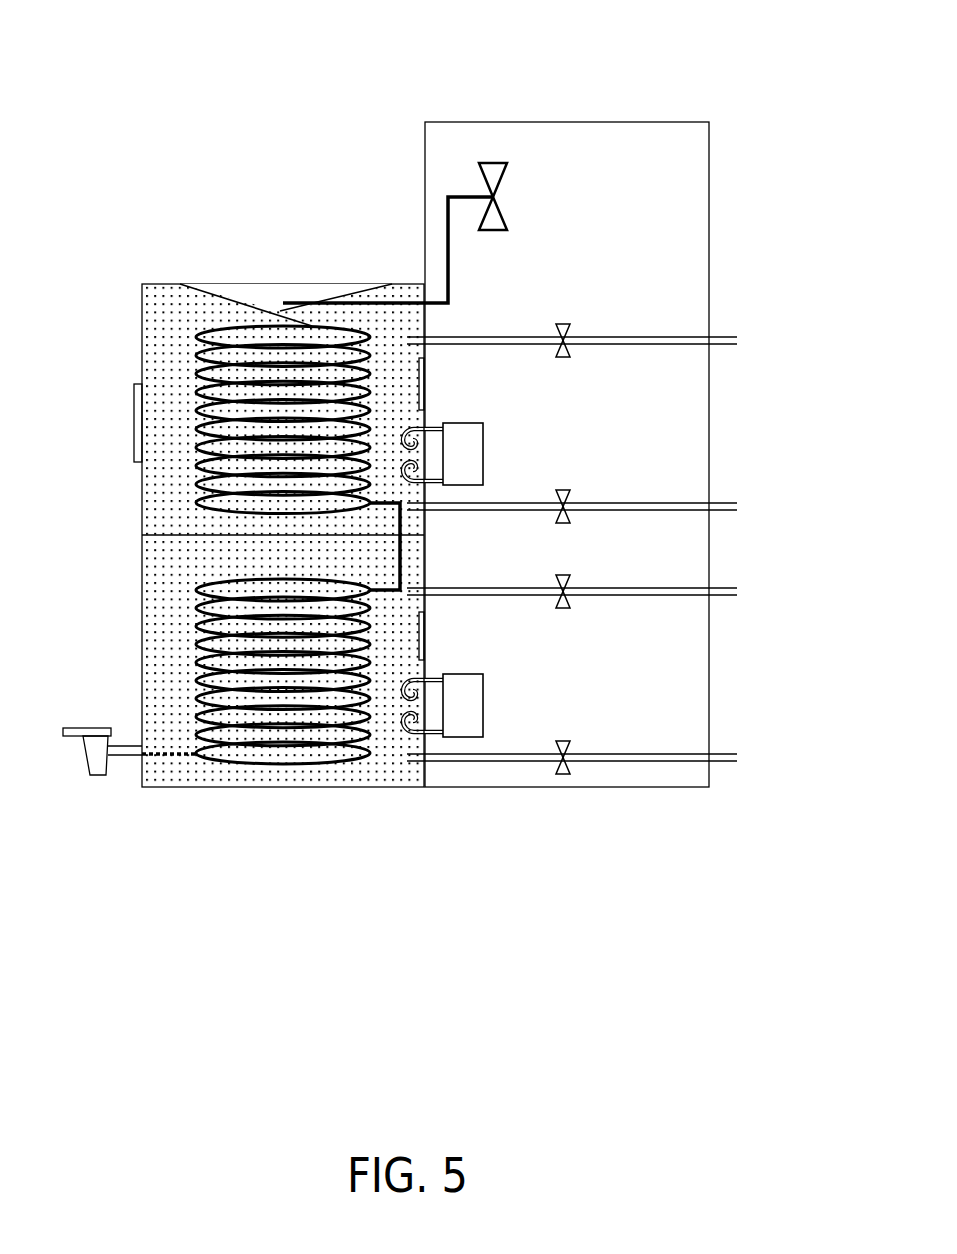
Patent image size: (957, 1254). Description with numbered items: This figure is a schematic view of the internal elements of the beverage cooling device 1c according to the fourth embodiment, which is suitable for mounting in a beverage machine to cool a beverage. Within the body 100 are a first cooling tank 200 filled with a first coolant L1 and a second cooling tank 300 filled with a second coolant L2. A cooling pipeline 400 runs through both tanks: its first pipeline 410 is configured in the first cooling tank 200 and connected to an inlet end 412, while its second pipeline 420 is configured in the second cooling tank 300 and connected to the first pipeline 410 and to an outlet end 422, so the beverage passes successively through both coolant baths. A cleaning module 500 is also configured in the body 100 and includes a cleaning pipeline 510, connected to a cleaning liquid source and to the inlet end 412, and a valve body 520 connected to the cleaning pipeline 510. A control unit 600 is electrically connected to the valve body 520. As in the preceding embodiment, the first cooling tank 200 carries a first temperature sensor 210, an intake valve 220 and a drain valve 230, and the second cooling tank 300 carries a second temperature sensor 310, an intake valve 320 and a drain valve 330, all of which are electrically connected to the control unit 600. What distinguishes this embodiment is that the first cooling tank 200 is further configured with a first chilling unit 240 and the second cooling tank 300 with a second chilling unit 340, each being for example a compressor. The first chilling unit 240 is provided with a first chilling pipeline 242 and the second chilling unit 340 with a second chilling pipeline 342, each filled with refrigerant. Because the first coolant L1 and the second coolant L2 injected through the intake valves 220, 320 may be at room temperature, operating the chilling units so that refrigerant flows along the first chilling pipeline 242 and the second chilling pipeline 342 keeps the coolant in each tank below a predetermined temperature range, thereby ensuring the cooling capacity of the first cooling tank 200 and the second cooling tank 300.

The beverage cooling device 1c is at (63, 38).
The body 100 is at (680, 204).
The first cooling tank 200 is at (596, 388).
The first temperature sensor 210 is at (425, 392).
The intake valve 220 is at (567, 323).
The drain valve 230 is at (567, 490).
The first chilling unit 240 is at (483, 473).
The first chilling pipeline 242 is at (433, 423).
The second cooling tank 300 is at (596, 655).
The second temperature sensor 310 is at (425, 643).
The intake valve 320 is at (570, 576).
The drain valve 330 is at (567, 742).
The second chilling unit 340 is at (472, 725).
The second chilling pipeline 342 is at (440, 670).
The cooling pipeline 400 is at (239, 605).
The first pipeline 410 is at (200, 338).
The inlet end 412 is at (252, 272).
The second pipeline 420 is at (200, 590).
The outlet end 422 is at (92, 760).
The cleaning module 500 is at (380, 231).
The cleaning pipeline 510 is at (447, 227).
The valve body 520 is at (490, 182).
The control unit 600 is at (134, 415).
The first coolant L1 is at (163, 503).
The second coolant L2 is at (163, 673).